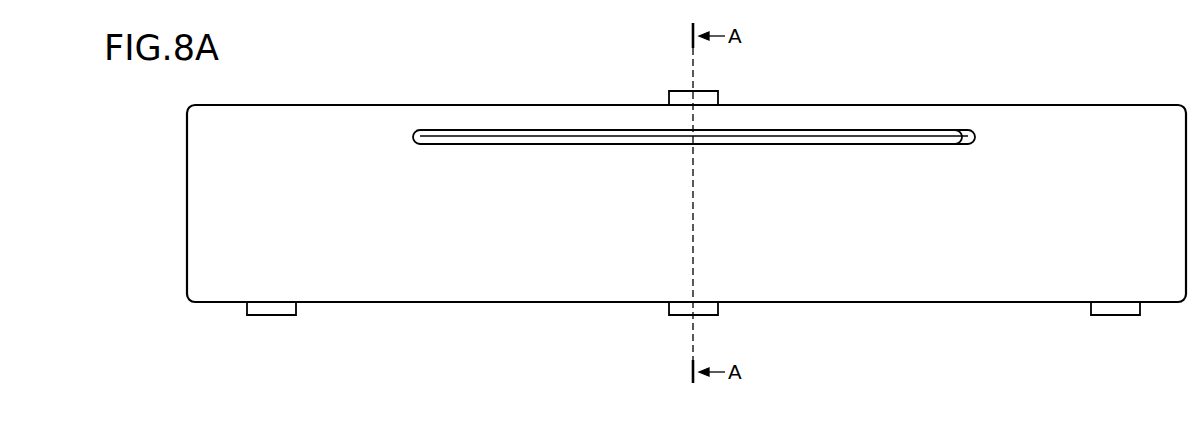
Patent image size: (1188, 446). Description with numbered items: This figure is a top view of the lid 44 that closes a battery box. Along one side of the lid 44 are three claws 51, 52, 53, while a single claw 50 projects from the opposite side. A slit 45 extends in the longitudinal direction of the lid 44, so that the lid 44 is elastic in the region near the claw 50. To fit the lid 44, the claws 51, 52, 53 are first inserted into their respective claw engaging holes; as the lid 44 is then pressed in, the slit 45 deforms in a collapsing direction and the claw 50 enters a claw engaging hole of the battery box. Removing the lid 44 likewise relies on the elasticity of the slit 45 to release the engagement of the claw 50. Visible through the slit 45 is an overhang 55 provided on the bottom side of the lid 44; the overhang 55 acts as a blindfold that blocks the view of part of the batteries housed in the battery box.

The lid 44 is at (710, 426).
The slit 45 is at (429, 130).
The overhang 55 is at (955, 138).
The claw 50 is at (712, 97).
The claw 52 is at (712, 310).
The claw 51 is at (271, 310).
The claw 53 is at (1115, 310).